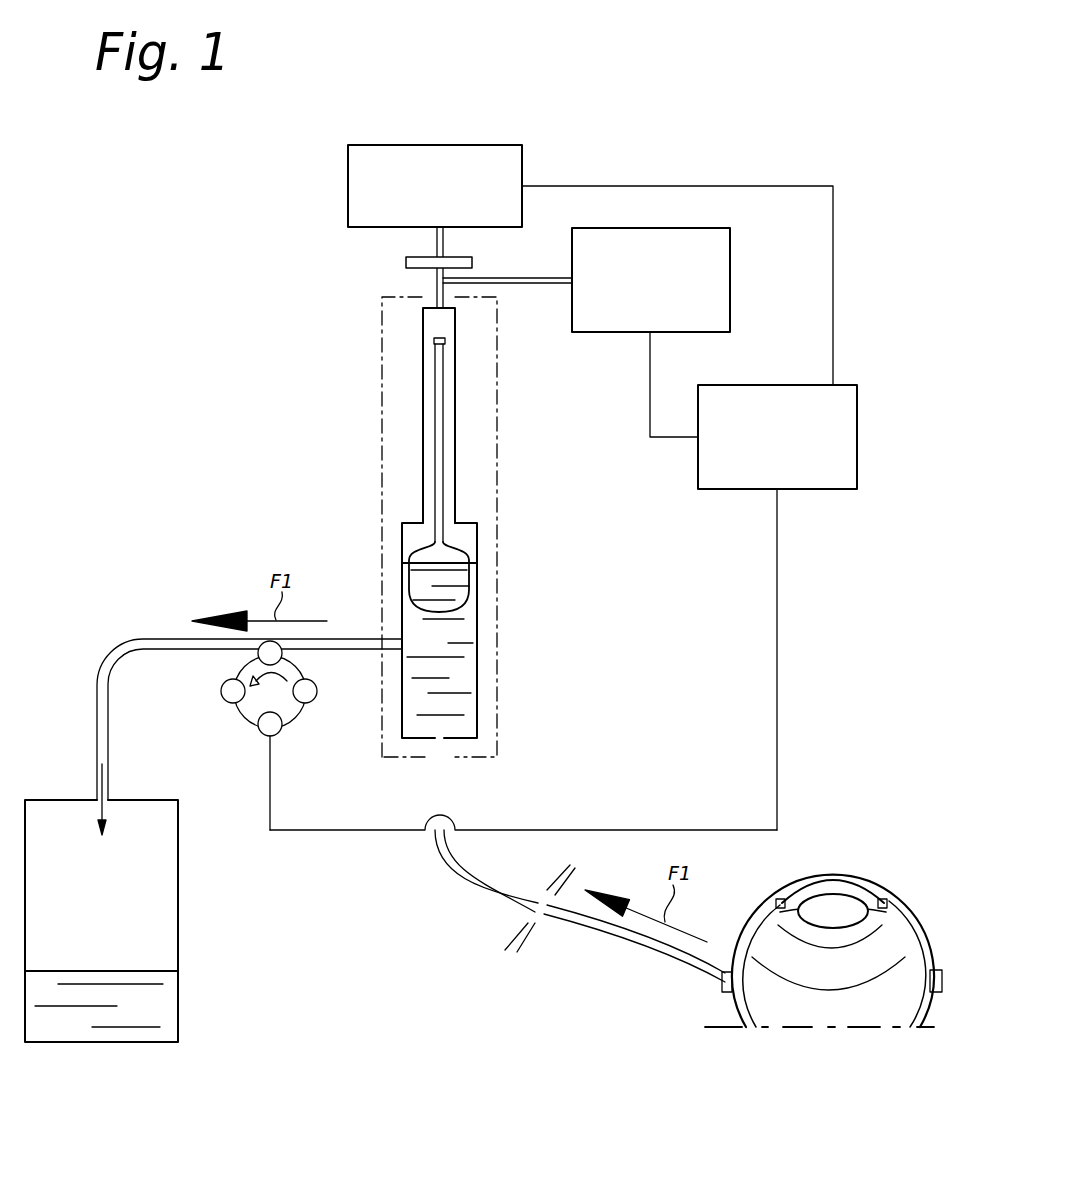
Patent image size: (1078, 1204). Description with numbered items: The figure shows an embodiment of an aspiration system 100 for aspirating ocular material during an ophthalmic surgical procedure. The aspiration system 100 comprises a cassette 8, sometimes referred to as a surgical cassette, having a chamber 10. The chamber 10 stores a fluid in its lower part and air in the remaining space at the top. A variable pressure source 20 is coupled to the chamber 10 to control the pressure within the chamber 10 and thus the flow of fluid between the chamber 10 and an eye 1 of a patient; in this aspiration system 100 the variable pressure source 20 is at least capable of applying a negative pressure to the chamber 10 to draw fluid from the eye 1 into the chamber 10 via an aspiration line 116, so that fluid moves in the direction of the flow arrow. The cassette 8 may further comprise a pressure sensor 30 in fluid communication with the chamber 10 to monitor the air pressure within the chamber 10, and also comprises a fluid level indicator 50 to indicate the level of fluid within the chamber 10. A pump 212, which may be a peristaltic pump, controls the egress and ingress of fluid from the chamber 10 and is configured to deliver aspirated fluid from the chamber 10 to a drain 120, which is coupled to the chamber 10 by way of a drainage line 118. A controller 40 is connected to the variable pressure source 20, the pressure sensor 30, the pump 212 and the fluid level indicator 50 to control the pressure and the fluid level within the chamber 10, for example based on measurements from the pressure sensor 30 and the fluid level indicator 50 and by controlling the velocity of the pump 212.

The aspiration system 100 is at (298, 277).
The variable pressure source 20 is at (440, 160).
The pressure sensor 30 is at (707, 290).
The controller 40 is at (782, 405).
The cassette 8 is at (382, 372).
The fluid level indicator 50 is at (482, 452).
The chamber 10 is at (472, 683).
The drainage line 118 is at (117, 657).
The pump 212 is at (288, 719).
The drain 120 is at (172, 910).
The aspiration line 116 is at (583, 925).
The eye 1 is at (893, 910).